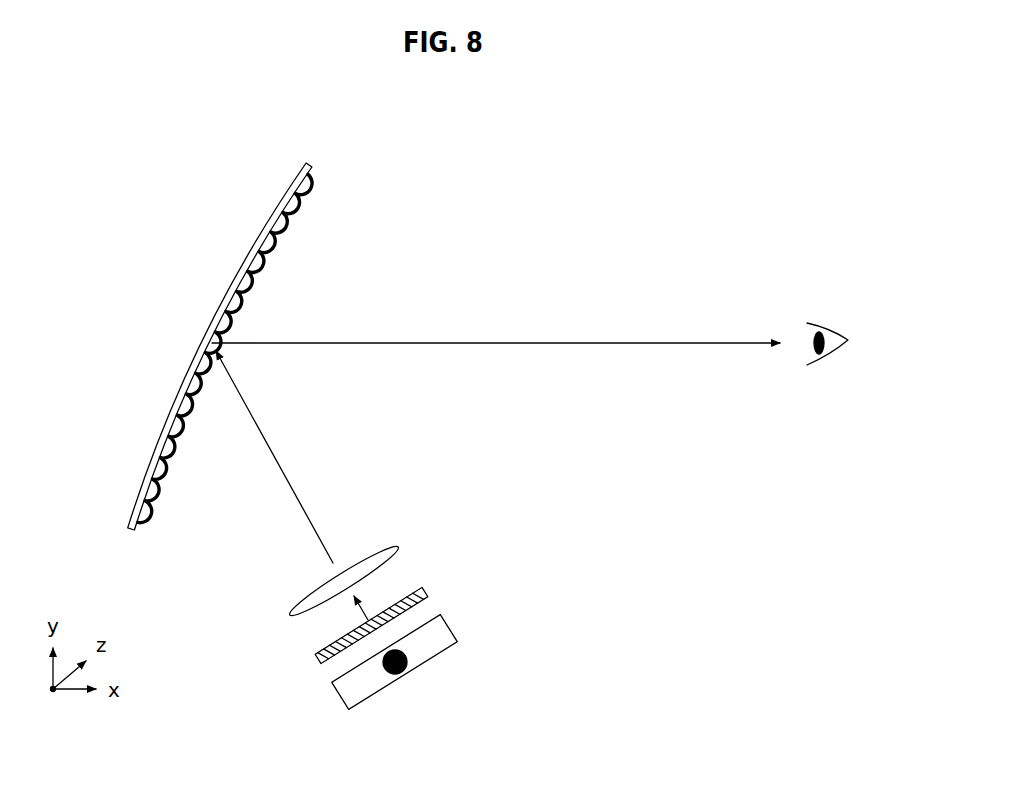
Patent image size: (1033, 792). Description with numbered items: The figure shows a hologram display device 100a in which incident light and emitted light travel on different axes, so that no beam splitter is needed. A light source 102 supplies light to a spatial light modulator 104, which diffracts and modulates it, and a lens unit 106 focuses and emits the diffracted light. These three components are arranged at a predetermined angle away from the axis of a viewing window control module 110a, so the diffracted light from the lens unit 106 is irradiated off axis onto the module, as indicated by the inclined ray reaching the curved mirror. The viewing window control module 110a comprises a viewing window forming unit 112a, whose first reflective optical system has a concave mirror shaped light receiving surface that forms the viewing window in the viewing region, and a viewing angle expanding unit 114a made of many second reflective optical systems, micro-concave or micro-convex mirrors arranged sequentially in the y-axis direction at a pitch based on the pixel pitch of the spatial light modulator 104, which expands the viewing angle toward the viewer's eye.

The hologram display device 100a is at (640, 205).
The viewing window control module 110a is at (230, 165).
The viewing window forming unit 112a is at (255, 245).
The viewing angle expanding unit 114a is at (262, 260).
The light source 102 is at (453, 628).
The spatial light modulator 104 is at (430, 587).
The lens unit 106 is at (400, 556).